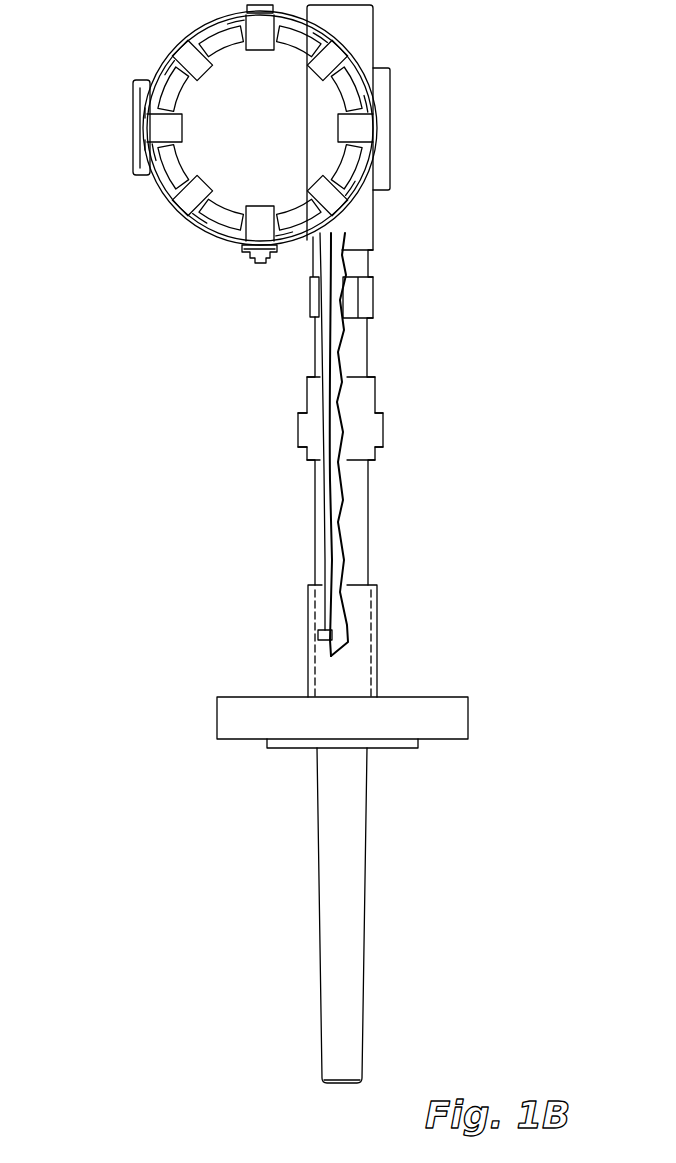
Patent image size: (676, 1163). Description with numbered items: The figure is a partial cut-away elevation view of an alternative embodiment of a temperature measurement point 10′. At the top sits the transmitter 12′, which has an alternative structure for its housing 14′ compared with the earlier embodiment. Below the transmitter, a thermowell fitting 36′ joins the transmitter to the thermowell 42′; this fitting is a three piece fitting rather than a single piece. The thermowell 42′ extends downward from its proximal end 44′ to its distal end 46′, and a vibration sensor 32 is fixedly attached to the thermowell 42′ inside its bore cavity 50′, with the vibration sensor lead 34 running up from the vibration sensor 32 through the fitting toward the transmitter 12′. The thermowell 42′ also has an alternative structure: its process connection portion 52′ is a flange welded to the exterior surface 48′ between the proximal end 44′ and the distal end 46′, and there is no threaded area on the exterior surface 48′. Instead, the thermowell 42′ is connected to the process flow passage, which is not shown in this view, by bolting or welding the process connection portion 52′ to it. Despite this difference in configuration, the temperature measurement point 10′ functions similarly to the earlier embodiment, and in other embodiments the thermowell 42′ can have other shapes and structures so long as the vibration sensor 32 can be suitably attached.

The temperature measurement point 10′ is at (162, 603).
The transmitter 12′ is at (174, 39).
The housing 14′ is at (133, 98).
The thermowell fitting 36′ is at (392, 432).
The vibration sensor lead 34 is at (322, 520).
The vibration sensor 32 is at (320, 632).
The proximal end 44′ is at (374, 586).
The exterior surface 48′ is at (376, 665).
The bore cavity 50′ is at (314, 678).
The process connection portion 52′ is at (217, 718).
The thermowell 42′ is at (374, 836).
The distal end 46′ is at (338, 1083).